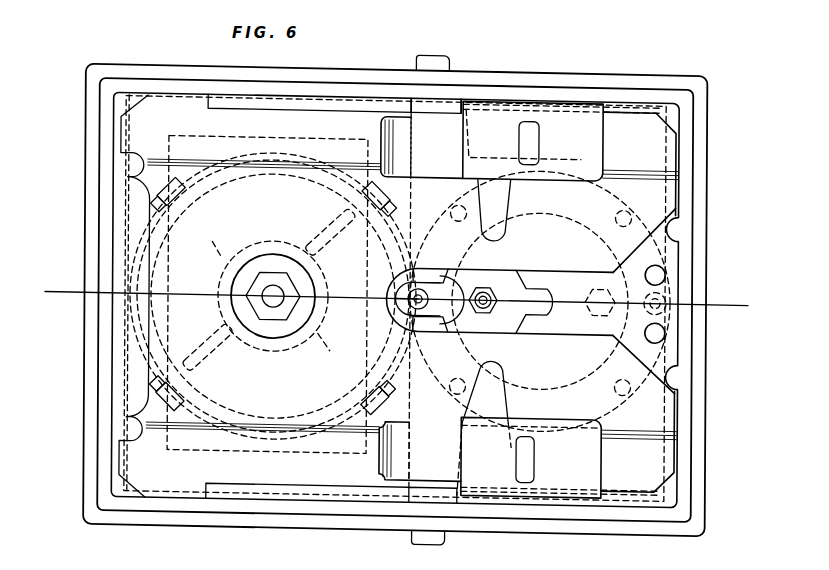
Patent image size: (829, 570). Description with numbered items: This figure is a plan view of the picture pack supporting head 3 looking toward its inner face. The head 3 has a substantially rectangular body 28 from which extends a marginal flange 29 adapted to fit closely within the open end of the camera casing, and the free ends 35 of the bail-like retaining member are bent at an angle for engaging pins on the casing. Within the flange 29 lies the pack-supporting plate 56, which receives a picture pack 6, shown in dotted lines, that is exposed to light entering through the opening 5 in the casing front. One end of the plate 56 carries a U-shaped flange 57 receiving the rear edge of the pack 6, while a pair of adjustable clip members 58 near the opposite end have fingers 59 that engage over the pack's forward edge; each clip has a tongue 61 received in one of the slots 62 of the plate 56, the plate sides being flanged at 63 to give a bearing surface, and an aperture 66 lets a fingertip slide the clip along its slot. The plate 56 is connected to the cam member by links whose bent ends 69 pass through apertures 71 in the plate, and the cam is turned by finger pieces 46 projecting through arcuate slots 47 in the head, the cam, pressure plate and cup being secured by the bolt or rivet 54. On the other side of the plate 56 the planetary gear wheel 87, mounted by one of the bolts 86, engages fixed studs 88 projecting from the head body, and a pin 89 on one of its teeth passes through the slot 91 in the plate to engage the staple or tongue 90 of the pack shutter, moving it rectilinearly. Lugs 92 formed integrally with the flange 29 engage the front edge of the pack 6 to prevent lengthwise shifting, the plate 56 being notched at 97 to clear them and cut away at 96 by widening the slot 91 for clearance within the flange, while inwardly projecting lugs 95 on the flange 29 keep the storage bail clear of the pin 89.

The head 3 is at (392, 286).
The body 28 is at (122, 75).
The marginal flange 29 is at (180, 87).
The notch 97 is at (292, 110).
The fingers 59 is at (395, 118).
The free ends 35 is at (428, 56).
The lugs 92 is at (445, 105).
The clip members 58 is at (560, 303).
The aperture 66 is at (538, 137).
The flange 63 is at (628, 118).
The apertures 71 is at (165, 165).
The link ends 69 is at (186, 192).
The finger pieces 46 is at (322, 238).
The slots 47 is at (226, 266).
The bolt or rivet 54 is at (256, 300).
The U-shaped flange 57 is at (128, 215).
The opening 5 is at (395, 299).
The staple or tongue 90 is at (412, 289).
The pin 89 is at (398, 300).
The bolts 86 is at (491, 296).
The slot 91 is at (538, 268).
The planetary gear wheel 87 is at (502, 316).
The tongue 61 is at (505, 210).
The slots 62 is at (578, 177).
The cut-away 96 is at (641, 238).
The lugs 95 is at (673, 226).
The studs or pins 88 is at (664, 326).
The plate 56 is at (267, 487).
The picture pack 6 is at (338, 492).